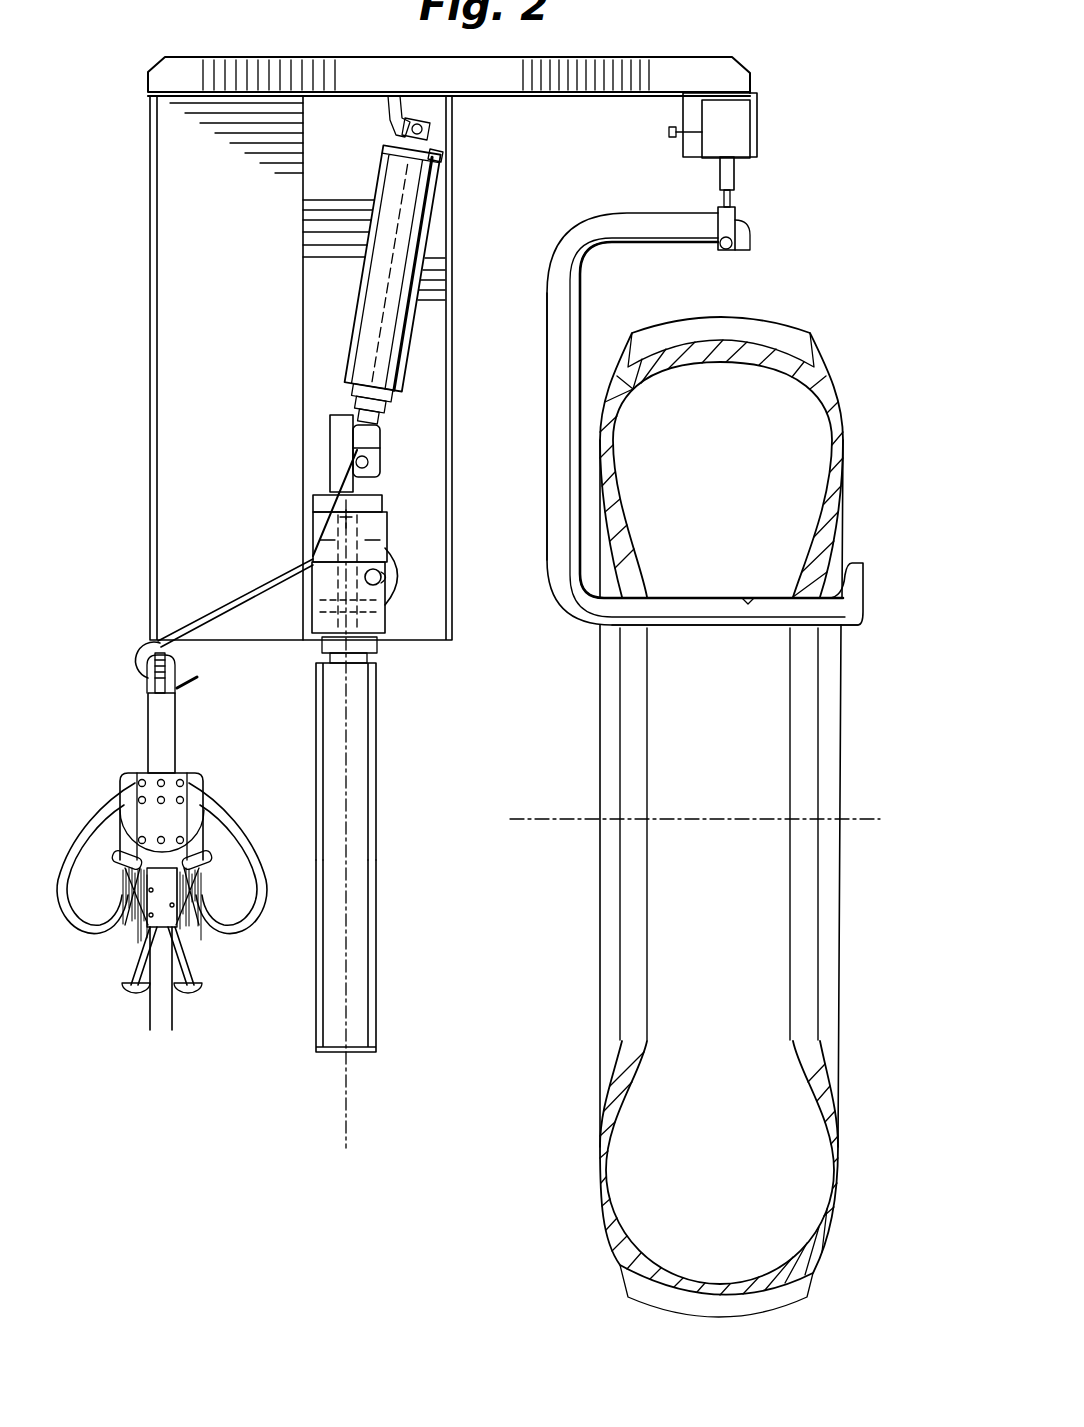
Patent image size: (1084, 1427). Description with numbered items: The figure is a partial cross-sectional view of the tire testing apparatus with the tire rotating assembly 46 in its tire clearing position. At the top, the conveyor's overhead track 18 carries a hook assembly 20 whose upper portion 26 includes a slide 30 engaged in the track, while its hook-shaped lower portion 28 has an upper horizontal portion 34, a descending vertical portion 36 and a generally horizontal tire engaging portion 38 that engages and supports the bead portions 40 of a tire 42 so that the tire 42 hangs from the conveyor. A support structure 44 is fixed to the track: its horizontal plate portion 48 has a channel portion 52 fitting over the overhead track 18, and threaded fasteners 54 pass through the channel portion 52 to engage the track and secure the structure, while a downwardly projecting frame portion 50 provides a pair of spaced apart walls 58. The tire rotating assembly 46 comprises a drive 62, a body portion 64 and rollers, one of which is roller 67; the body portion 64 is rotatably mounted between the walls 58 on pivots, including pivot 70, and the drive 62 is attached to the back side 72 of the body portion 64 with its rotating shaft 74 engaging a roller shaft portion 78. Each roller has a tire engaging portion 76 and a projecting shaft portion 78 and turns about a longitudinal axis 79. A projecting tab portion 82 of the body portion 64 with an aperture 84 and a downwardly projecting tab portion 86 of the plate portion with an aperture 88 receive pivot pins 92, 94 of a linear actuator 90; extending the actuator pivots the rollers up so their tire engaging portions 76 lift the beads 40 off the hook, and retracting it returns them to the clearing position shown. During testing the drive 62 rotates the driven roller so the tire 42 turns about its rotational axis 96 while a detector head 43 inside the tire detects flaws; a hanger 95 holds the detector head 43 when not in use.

The overhead track 18 is at (753, 163).
The hook assembly 20 is at (735, 198).
The upper portion 26 is at (720, 174).
The lower portion 28 is at (627, 212).
The slide 30 is at (723, 158).
The upper horizontal portion 34 is at (668, 243).
The descending vertical portion 36 is at (547, 297).
The tire engaging portion 38 is at (587, 600).
The bead portions 40 is at (808, 1035).
The tire 42 is at (836, 993).
The detector head 43 is at (150, 733).
The support structure 44 is at (167, 147).
The tire rotating assembly 46 is at (313, 517).
The horizontal plate portion 48 is at (663, 93).
The frame portion 50 is at (185, 214).
The channel portion 52 is at (757, 113).
The threaded fasteners 54 is at (667, 130).
The walls 58 is at (317, 282).
The drive 62 is at (333, 443).
The body portion 64 is at (378, 598).
The roller 67 is at (378, 795).
The pivot 70 is at (400, 566).
The back side 72 is at (387, 500).
The rotating shaft 74 is at (325, 528).
The tire engaging portion 76 is at (378, 940).
The shaft portion 78 is at (398, 633).
The longitudinal axis 79 is at (348, 1118).
The tab portion 82 is at (376, 490).
The aperture 84 is at (386, 395).
The tab portion 86 is at (430, 108).
The aperture 88 is at (440, 158).
The linear actuator 90 is at (433, 232).
The pivot pin 92 is at (382, 445).
The pivot pin 94 is at (440, 150).
The hanger 95 is at (135, 680).
The rotational axis 96 is at (862, 815).